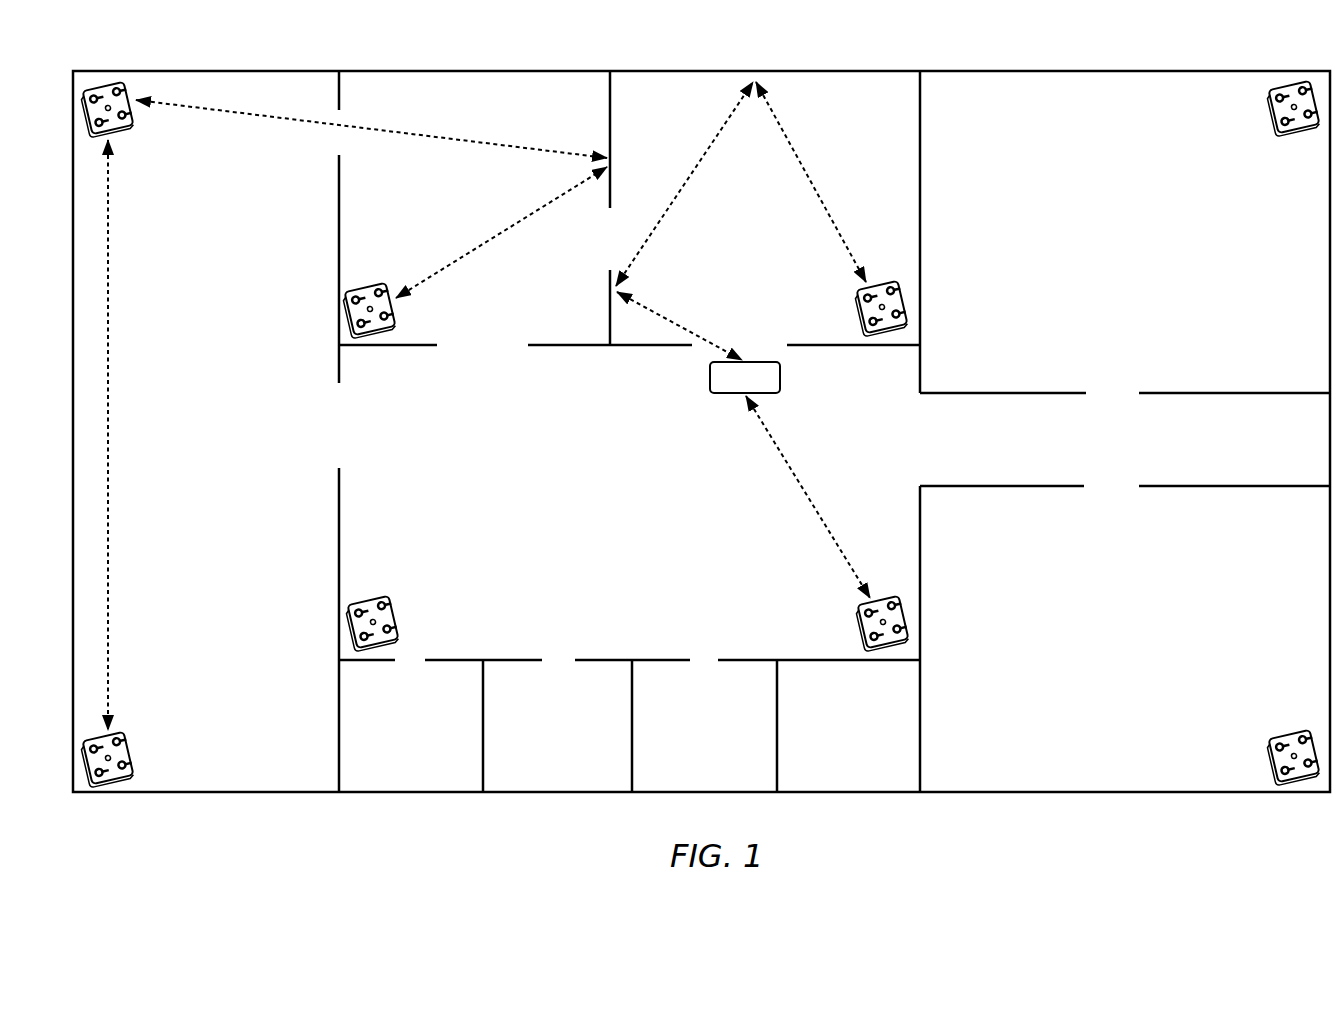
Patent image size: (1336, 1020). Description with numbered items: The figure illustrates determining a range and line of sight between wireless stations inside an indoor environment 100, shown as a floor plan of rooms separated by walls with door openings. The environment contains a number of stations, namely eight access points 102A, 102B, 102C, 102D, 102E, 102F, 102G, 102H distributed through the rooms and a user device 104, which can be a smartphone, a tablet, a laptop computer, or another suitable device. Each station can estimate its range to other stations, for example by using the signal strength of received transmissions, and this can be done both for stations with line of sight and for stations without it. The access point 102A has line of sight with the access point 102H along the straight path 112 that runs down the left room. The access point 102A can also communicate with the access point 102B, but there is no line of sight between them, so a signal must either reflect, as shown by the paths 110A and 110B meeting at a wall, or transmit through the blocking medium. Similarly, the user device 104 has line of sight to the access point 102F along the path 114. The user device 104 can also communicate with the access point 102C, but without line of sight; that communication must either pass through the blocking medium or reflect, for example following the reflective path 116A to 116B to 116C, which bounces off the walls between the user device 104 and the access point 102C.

The indoor environment 100 is at (988, 45).
The access point 102A is at (133, 121).
The access point 102B is at (369, 298).
The access point 102C is at (857, 309).
The access point 102D is at (1294, 125).
The access point 102E is at (1293, 745).
The access point 102F is at (858, 624).
The access point 102G is at (372, 610).
The access point 102H is at (137, 760).
The user device 104 is at (745, 377).
The path 110A is at (463, 140).
The path 110B is at (463, 262).
The path 112 is at (112, 295).
The path 114 is at (803, 482).
The reflective path 116A is at (793, 138).
The reflective path 116B is at (713, 139).
The reflective path 116C is at (660, 310).